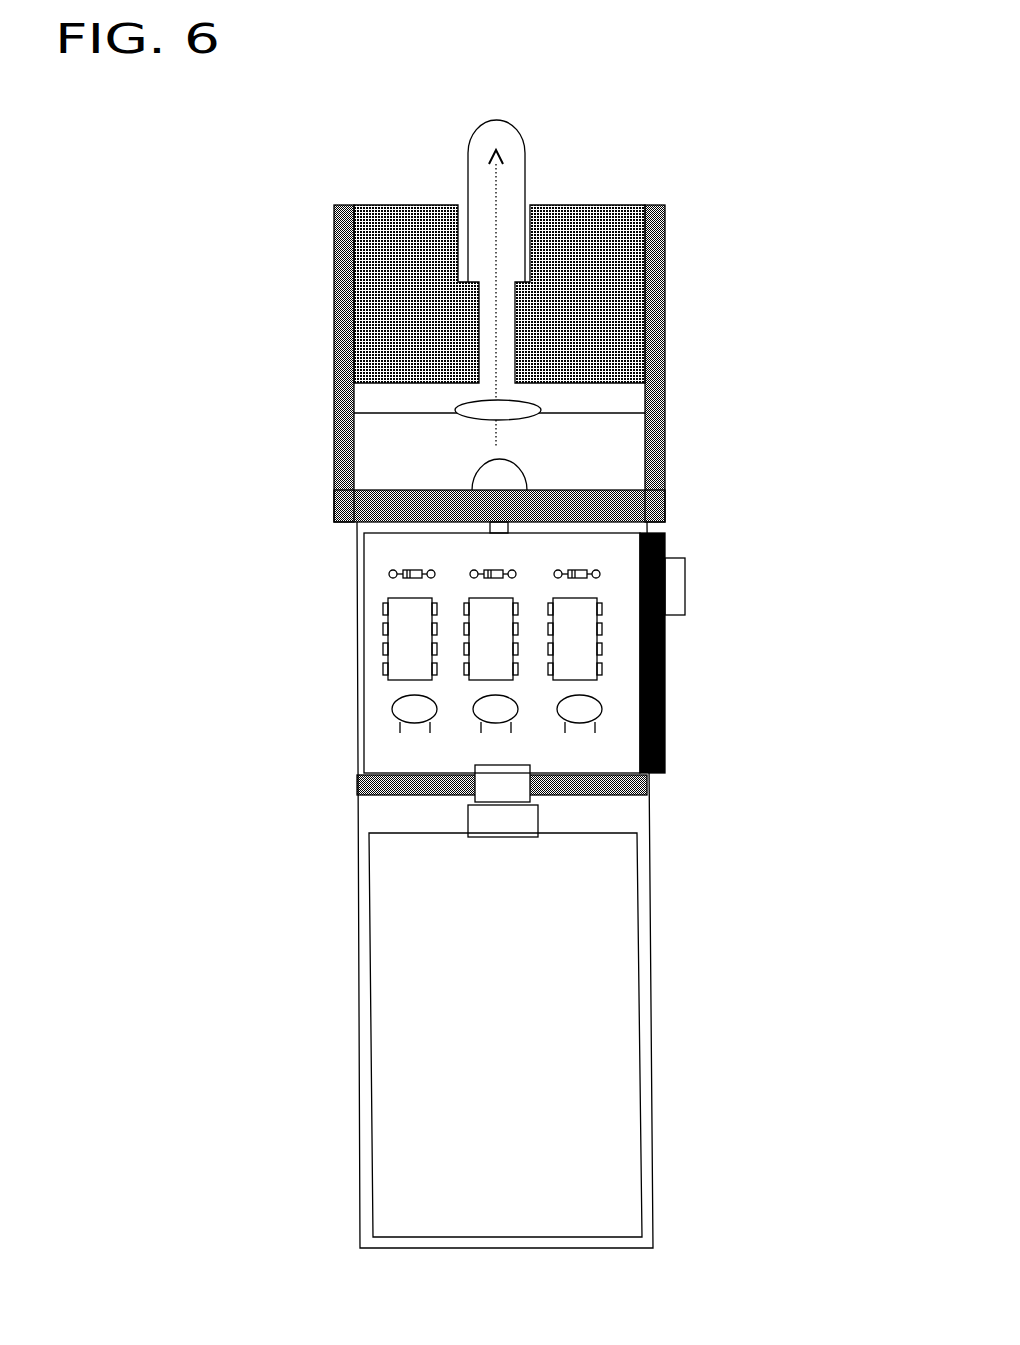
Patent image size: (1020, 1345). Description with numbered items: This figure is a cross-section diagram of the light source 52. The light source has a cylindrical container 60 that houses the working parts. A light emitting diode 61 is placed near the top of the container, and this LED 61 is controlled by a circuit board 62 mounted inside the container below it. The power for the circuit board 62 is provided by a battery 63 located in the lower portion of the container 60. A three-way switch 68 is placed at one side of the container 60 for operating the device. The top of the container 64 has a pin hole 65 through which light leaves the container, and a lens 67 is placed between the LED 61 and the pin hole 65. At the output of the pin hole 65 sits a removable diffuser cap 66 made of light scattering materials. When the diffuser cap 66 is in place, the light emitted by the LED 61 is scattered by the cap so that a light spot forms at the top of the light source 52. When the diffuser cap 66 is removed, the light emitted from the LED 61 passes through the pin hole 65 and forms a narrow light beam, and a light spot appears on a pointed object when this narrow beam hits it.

The light source 52 is at (353, 822).
The cylindrical container 60 is at (353, 692).
The light emitting diode 61 is at (487, 470).
The circuit board 62 is at (388, 590).
The battery 63 is at (393, 1045).
The top of the container 64 is at (662, 230).
The pin hole 65 is at (487, 300).
The removable diffuser cap 66 is at (513, 152).
The lens 67 is at (510, 415).
The 3-way switch 68 is at (675, 600).